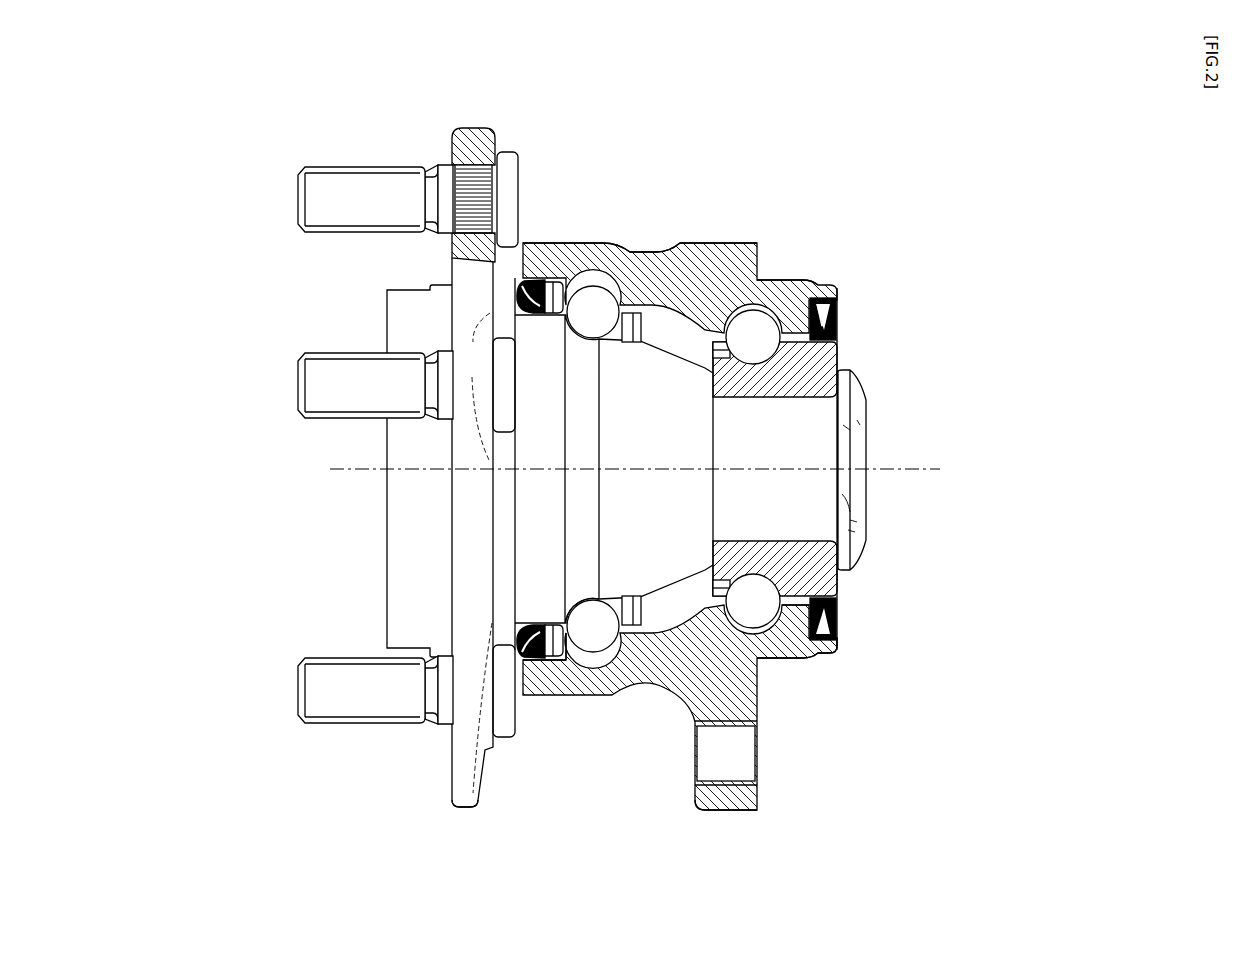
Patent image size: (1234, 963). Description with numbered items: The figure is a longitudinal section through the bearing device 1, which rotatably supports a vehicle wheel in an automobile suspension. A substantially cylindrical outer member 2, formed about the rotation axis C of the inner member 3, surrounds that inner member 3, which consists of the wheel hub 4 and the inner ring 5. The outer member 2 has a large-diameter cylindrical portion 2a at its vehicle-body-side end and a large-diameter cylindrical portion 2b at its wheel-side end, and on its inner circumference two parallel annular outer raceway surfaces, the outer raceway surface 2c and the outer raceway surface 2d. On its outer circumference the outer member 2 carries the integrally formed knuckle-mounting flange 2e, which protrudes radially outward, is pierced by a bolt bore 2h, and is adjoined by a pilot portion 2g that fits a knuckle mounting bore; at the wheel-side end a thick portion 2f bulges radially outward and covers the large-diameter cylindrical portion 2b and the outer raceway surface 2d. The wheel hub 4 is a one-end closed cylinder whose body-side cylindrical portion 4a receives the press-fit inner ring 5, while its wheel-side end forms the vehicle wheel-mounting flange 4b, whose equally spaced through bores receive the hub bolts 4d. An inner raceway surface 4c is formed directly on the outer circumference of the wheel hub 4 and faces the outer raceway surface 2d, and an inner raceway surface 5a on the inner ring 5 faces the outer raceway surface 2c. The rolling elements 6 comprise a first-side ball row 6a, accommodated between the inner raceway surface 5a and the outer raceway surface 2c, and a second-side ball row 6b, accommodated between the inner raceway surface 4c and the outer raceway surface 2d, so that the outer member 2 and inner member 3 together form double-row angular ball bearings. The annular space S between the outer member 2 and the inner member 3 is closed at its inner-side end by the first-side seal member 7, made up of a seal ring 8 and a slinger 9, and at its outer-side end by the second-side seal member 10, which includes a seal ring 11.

The bearing device 1 is at (525, 439).
The outer member 2 is at (737, 193).
The large-diameter cylindrical portion 2a is at (808, 641).
The large-diameter cylindrical portion 2b is at (540, 663).
The outer raceway surface 2c is at (757, 628).
The outer raceway surface 2d is at (600, 663).
The knuckle-mounting flange 2e is at (730, 812).
The thick portion 2f is at (597, 242).
The pilot portion 2g is at (793, 683).
The bolt bore 2h is at (702, 775).
The inner member 3 is at (910, 408).
The wheel hub 4 is at (470, 128).
The cylindrical portion 4a is at (826, 494).
The vehicle wheel-mounting flange 4b is at (462, 808).
The inner raceway surface 4c is at (583, 603).
The hub bolt 4d is at (335, 166).
The inner ring 5 is at (840, 585).
The inner raceway surface 5a is at (752, 576).
The rolling elements 6 is at (675, 469).
The first-side ball row 6a is at (760, 366).
The second-side ball row 6b is at (606, 331).
The first-side seal member 7 is at (864, 462).
The seal ring 8 is at (791, 283).
The slinger 9 is at (833, 322).
The second-side seal member 10 is at (536, 281).
The seal ring 11 is at (553, 282).
The annular space S is at (653, 314).
The rotation axis C is at (645, 470).